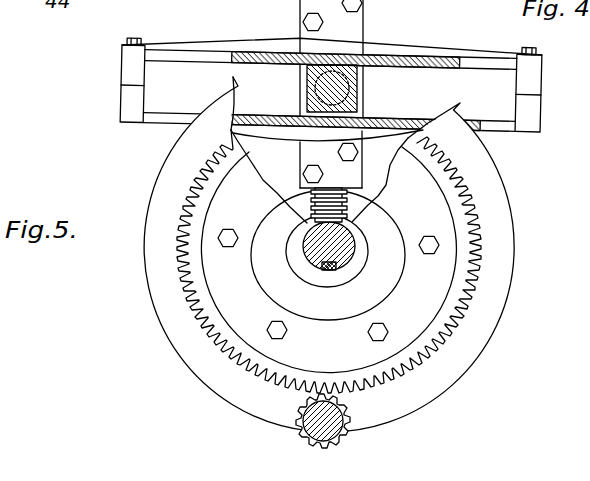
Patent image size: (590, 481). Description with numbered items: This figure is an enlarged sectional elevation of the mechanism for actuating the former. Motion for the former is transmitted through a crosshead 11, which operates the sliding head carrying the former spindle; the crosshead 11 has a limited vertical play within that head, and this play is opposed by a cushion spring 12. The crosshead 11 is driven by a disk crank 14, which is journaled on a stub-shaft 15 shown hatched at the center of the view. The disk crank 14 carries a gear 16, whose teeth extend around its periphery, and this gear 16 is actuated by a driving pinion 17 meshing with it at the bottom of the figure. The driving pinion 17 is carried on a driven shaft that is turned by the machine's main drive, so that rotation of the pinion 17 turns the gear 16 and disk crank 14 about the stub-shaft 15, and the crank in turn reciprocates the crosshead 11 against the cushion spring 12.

The crosshead 11 is at (583, 82).
The cushion spring 12 is at (346, 203).
The disk crank 14 is at (560, 270).
The stub-shaft 15 is at (352, 255).
The gear 16 is at (478, 355).
The driving pinion 17 is at (385, 452).